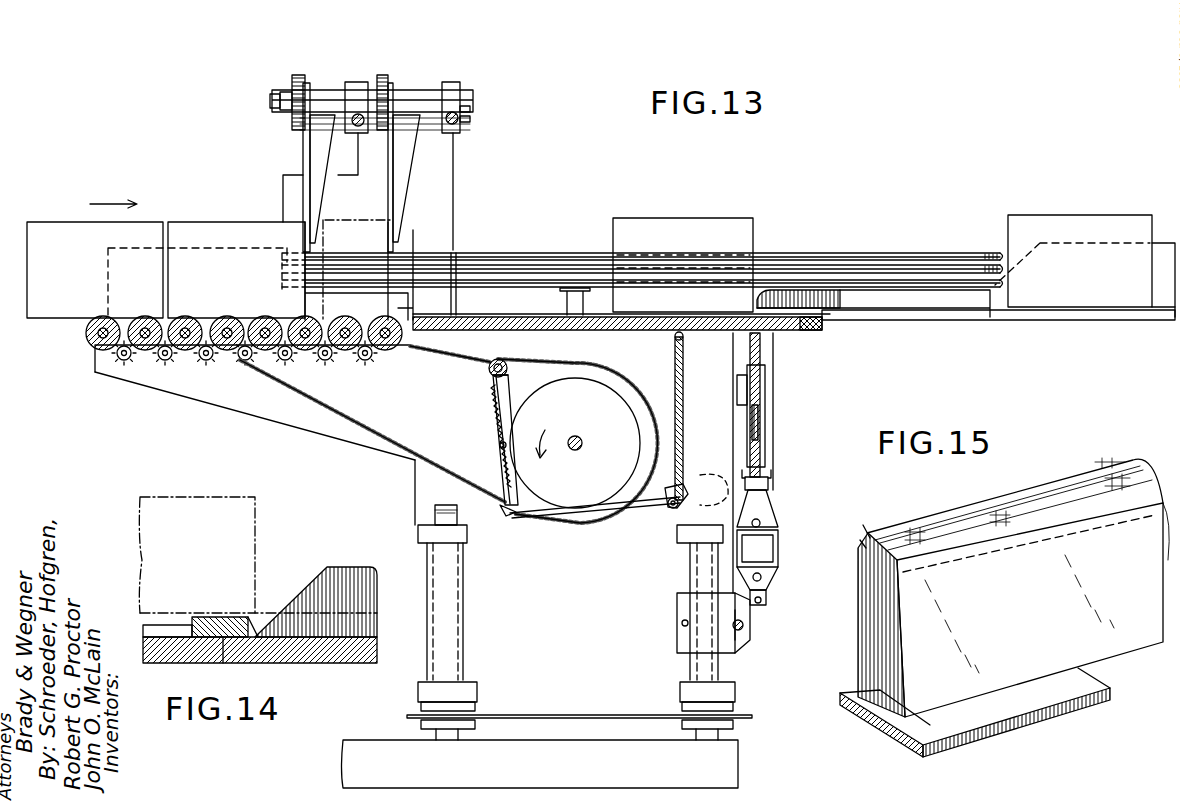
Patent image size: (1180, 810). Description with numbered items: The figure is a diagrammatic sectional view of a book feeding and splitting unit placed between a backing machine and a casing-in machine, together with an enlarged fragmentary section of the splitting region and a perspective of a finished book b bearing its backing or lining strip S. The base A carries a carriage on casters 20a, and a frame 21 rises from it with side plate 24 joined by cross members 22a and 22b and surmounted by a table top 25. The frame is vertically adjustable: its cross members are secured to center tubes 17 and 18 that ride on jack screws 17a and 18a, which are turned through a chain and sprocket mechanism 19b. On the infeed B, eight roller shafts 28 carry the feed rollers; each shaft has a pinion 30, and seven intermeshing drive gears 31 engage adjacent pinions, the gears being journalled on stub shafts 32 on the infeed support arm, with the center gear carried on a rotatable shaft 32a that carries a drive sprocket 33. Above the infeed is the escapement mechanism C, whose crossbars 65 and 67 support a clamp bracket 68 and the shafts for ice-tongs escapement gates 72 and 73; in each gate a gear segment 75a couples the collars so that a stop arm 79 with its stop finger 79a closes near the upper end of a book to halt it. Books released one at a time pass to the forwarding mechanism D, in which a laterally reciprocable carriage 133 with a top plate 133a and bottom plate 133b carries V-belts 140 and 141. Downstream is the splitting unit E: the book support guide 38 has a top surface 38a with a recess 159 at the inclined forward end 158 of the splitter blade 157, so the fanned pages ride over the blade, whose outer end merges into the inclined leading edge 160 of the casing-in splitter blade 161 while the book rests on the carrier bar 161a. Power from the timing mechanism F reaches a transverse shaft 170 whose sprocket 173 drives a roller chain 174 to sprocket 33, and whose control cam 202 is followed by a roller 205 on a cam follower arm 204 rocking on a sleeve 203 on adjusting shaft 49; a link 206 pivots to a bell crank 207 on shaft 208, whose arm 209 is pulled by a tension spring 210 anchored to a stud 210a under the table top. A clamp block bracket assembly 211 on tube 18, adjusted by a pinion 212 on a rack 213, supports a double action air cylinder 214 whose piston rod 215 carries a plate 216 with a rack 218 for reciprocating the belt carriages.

In FIG. 13, the center tube 17 is at (465, 603).
In FIG. 13, the jack screw 17a is at (428, 503).
In FIG. 13, the center tube 18 is at (690, 664).
In FIG. 13, the jack screw 18a is at (716, 480).
In FIG. 13, the chain and sprocket mechanism 19b is at (407, 716).
In FIG. 13, the casters 20a is at (680, 540).
In FIG. 13, the frame 21 is at (402, 473).
In FIG. 13, the cross member 22a is at (470, 540).
In FIG. 13, the cross member 22b is at (477, 688).
In FIG. 13, the side plate 24 is at (578, 654).
In FIG. 13, the table top 25 is at (585, 331).
In FIG. 14, the table top 25 is at (170, 655).
In FIG. 13, the roller shafts 28 is at (147, 318).
In FIG. 13, the pinion 30 is at (262, 318).
In FIG. 13, the drive gears 31 is at (165, 360).
In FIG. 13, the sprocket 32 is at (122, 360).
In FIG. 13, the rotatable shaft 32a is at (240, 366).
In FIG. 13, the drive sprocket 33 is at (270, 372).
In FIG. 13, the book support guide 38 is at (812, 328).
In FIG. 14, the book support guide 38 is at (222, 663).
In FIG. 14, the top surface 38a is at (205, 617).
In FIG. 13, the book side plate adjusting shaft 49 is at (494, 386).
In FIG. 13, the crossbar 65 is at (455, 118).
In FIG. 13, the crossbar 67 is at (358, 124).
In FIG. 13, the clamp bracket 68 is at (458, 96).
In FIG. 13, the escapement gate 72 is at (292, 156).
In FIG. 13, the escapement gate 73 is at (438, 160).
In FIG. 13, the gear segment 75a is at (383, 75).
In FIG. 13, the stop arm 79 is at (405, 183).
In FIG. 13, the stop finger 79a is at (305, 232).
In FIG. 13, the carriage 133 is at (893, 252).
In FIG. 13, the top plate 133a is at (838, 240).
In FIG. 13, the bottom plate 133b is at (900, 296).
In FIG. 13, the V-belt 140 is at (470, 262).
In FIG. 13, the V-belt 141 is at (492, 280).
In FIG. 13, the splitter blade 157 is at (865, 302).
In FIG. 14, the splitter blade 157 is at (320, 560).
In FIG. 13, the inclined forward end 158 is at (788, 305).
In FIG. 14, the inclined forward end 158 is at (295, 585).
In FIG. 13, the recess 159 is at (730, 312).
In FIG. 14, the recess 159 is at (235, 605).
In FIG. 13, the inclined leading edge 160 is at (1008, 294).
In FIG. 13, the casing-in splitter blade 161 is at (1165, 318).
In FIG. 15, the casing-in splitter blade 161 is at (880, 715).
In FIG. 13, the carrier bar 161a is at (1048, 318).
In FIG. 15, the carrier bar 161a is at (1030, 718).
In FIG. 13, the transverse shaft 170 is at (578, 452).
In FIG. 13, the sprocket 173 is at (600, 372).
In FIG. 13, the roller chain 174 is at (450, 355).
In FIG. 13, the control cam 202 is at (604, 419).
In FIG. 13, the sleeve 203 is at (490, 372).
In FIG. 13, the cam follower arm 204 is at (495, 400).
In FIG. 13, the cam follower roller 205 is at (490, 444).
In FIG. 13, the link 206 is at (560, 524).
In FIG. 13, the bell crank 207 is at (686, 486).
In FIG. 13, the shaft 208 is at (675, 512).
In FIG. 13, the arm 209 is at (668, 508).
In FIG. 13, the tension spring 210 is at (684, 402).
In FIG. 13, the stud 210a is at (684, 338).
In FIG. 13, the clamp block bracket assembly 211 is at (748, 640).
In FIG. 13, the pinion 212 is at (744, 624).
In FIG. 13, the rack 213 is at (740, 658).
In FIG. 13, the double action air cylinder 214 is at (778, 538).
In FIG. 13, the piston rod 215 is at (766, 486).
In FIG. 13, the plate 216 is at (766, 410).
In FIG. 13, the rack 218 is at (758, 389).
In FIG. 13, the book b is at (40, 222).
In FIG. 14, the book b is at (152, 503).
In FIG. 15, the book b is at (1024, 624).
In FIG. 13, the base A is at (402, 521).
In FIG. 13, the infeed B is at (84, 360).
In FIG. 13, the escapement mechanism C is at (425, 83).
In FIG. 13, the book forwarding mechanism D is at (546, 250).
In FIG. 13, the book splitting unit E is at (747, 290).
In FIG. 14, the book splitting unit E is at (270, 572).
In FIG. 13, the power distributing and timing mechanism F is at (593, 554).
In FIG. 15, the backing or lining strip S is at (935, 508).